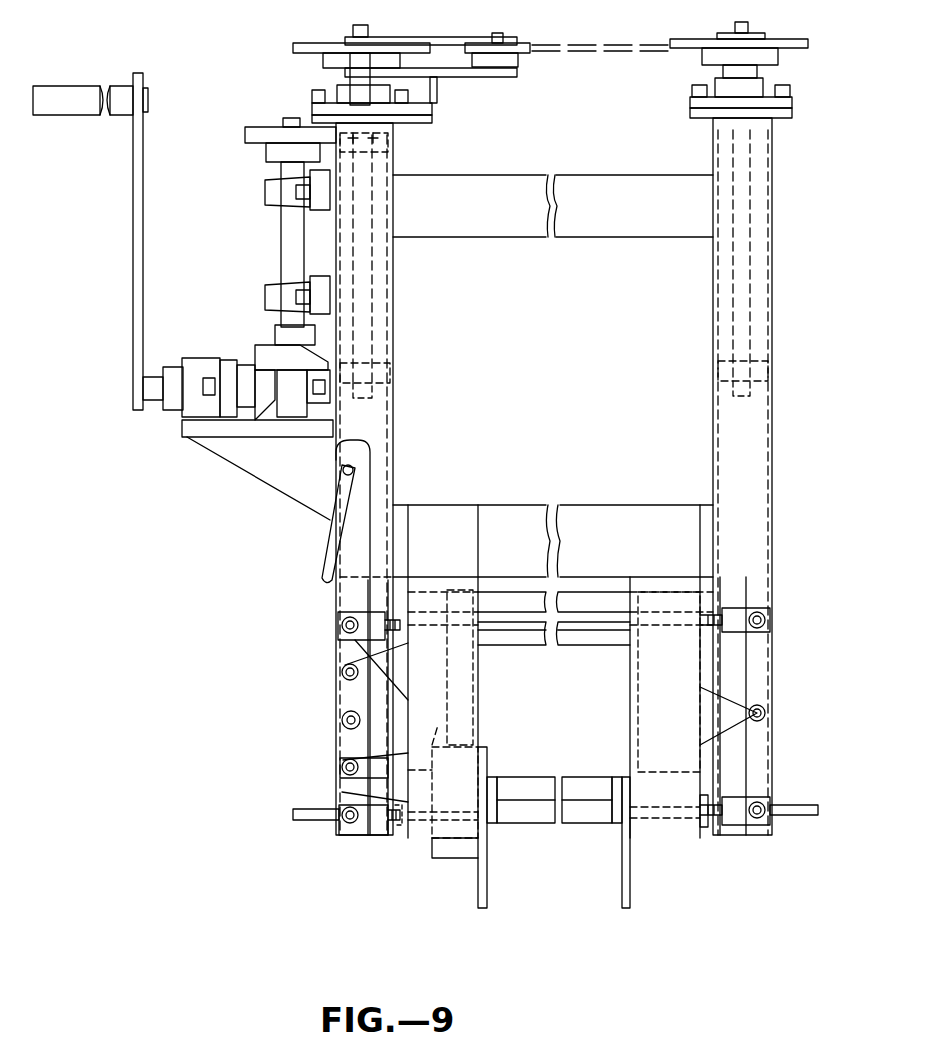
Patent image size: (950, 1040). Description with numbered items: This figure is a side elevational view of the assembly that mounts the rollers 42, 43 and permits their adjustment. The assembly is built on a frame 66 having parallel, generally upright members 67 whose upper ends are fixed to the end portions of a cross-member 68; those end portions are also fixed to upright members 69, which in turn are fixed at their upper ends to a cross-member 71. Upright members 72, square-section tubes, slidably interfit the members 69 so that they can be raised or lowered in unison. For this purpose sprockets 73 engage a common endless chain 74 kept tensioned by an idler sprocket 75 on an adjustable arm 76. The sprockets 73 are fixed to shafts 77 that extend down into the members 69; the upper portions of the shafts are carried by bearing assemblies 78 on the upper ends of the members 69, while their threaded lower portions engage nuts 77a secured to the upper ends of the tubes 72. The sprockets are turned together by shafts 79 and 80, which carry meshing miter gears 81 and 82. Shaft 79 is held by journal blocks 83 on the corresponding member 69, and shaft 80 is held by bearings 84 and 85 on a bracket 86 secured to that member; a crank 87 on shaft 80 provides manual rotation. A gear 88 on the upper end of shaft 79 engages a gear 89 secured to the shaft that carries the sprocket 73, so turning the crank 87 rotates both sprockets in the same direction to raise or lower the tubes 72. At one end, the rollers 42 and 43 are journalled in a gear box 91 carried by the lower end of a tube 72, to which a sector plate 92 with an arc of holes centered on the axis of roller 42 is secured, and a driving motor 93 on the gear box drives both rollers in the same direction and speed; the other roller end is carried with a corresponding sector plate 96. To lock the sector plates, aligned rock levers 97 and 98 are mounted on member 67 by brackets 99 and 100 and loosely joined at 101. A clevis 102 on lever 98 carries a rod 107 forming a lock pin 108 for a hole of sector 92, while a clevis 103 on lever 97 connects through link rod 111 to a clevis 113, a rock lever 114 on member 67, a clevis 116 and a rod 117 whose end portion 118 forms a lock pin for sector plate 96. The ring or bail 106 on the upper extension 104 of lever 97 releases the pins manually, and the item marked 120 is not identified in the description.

The roller 42 is at (596, 788).
The roller 43 is at (542, 782).
The frame 66 is at (409, 500).
The upright member 67 is at (478, 716).
The cross-member 68 is at (530, 520).
The upright member 69 is at (385, 338).
The cross-member 71 is at (580, 182).
The upright member 72 is at (380, 600).
The sprocket 73 is at (318, 43).
The endless chain 74 is at (612, 36).
The idler sprocket 75 is at (515, 43).
The adjustable arm 76 is at (436, 37).
The shaft 77 is at (390, 270).
The nut 77a is at (393, 373).
The bearing assembly 78 is at (345, 92).
The shaft 79 is at (290, 240).
The shaft 80 is at (292, 400).
The miter gear 81 is at (280, 335).
The miter gear 82 is at (262, 365).
The journal block 83 is at (268, 192).
The bearing 84 is at (318, 402).
The bearing 85 is at (210, 358).
The bracket 86 is at (240, 462).
The crank 87 is at (130, 282).
The gear 88 is at (255, 132).
The gear 89 is at (394, 140).
The gear box 91 is at (455, 848).
The sector plate 92 is at (488, 896).
The driving motor 93 is at (400, 750).
The sector plate 96 is at (631, 880).
The rock lever 97 is at (350, 655).
The rock lever 98 is at (350, 742).
The bracket 99 is at (380, 676).
The bracket 100 is at (345, 791).
The loose connection 101 is at (342, 719).
The clevis 102 is at (360, 830).
The clevis 103 is at (355, 634).
The upper extension 104 is at (342, 470).
The ring or bail 106 is at (332, 548).
The rod 107 is at (403, 828).
The lock pin 108 is at (490, 823).
The link rod 111 is at (612, 645).
The clevis 113 is at (765, 630).
The rock lever 114 is at (760, 688).
The clevis 116 is at (740, 818).
The rod 117 is at (715, 820).
The lock pin 118 is at (618, 826).
The slide bar 120 is at (540, 645).